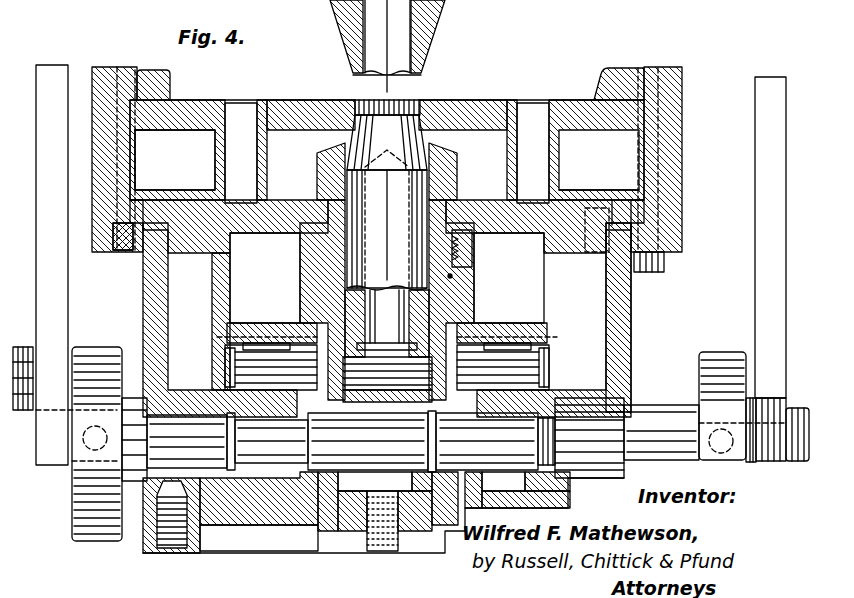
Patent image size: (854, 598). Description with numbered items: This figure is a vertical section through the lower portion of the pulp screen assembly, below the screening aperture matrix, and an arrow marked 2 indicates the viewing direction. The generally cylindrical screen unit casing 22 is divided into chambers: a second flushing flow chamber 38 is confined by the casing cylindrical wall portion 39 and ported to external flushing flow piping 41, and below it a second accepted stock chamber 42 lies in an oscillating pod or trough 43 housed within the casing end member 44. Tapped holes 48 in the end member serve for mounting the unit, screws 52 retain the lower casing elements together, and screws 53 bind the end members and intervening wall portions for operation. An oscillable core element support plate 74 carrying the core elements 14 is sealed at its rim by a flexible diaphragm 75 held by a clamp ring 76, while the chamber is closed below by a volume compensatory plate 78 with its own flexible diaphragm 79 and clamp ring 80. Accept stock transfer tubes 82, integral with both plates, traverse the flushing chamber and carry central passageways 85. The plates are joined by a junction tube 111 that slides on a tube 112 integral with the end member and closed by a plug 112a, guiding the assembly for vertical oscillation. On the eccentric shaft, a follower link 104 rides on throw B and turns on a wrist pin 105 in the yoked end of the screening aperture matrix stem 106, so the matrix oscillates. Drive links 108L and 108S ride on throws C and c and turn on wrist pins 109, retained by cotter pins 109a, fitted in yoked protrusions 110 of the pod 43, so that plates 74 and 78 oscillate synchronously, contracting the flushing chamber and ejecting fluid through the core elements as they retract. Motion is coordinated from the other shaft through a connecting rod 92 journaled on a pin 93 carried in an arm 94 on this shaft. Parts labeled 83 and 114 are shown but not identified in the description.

The section line arrow 2 is at (385, 80).
The core elements 14 is at (278, 100).
The screen unit casing 22 is at (414, 242).
The second flushing flow chamber 38 is at (188, 173).
The casing cylindrical wall portion 39 is at (673, 171).
The external flushing flow conduit or piping 41 is at (424, 68).
The second accepted stock chamber 42 is at (277, 271).
The oscillating pod or trough 43 is at (214, 289).
The casing end member 44 is at (633, 313).
The tapped holes 48 is at (176, 525).
The screws 52 is at (665, 267).
The screws 53 is at (120, 250).
The core element support plate 74 is at (598, 127).
The flexible rim sealing diaphragm 75 is at (138, 125).
The clamp ring 76 is at (154, 82).
The second flushing flow chamber closing and cyclical volume compensatory plate 78 is at (580, 200).
The flexible rim sealing diaphragm 79 is at (612, 200).
The clamp ring 80 is at (604, 249).
The accept stock transfer tubes 82 is at (318, 168).
The bearing 83 is at (583, 430).
The accept stock central fluid communicating passageways 85 is at (250, 161).
The connecting rod 92 is at (60, 279).
The pin 93 is at (16, 358).
The arm 94 is at (95, 525).
The eccentric follower link 104 is at (380, 410).
The wrist pin 105 is at (317, 377).
The screening aperture matrix stem 106 is at (378, 226).
The eccentric drive link 108L is at (500, 382).
The eccentric drive link 108S is at (232, 386).
The wrist pin 109 is at (228, 372).
The cotter pins 109a is at (383, 313).
The yoked protrusion 110 is at (226, 340).
The junction tube 111 is at (345, 130).
The tube 112 is at (452, 274).
The plug 112a is at (410, 517).
The screw 114 is at (470, 247).
The eccentric throw B is at (377, 446).
The eccentric throw C is at (485, 446).
The eccentric throw c is at (270, 443).